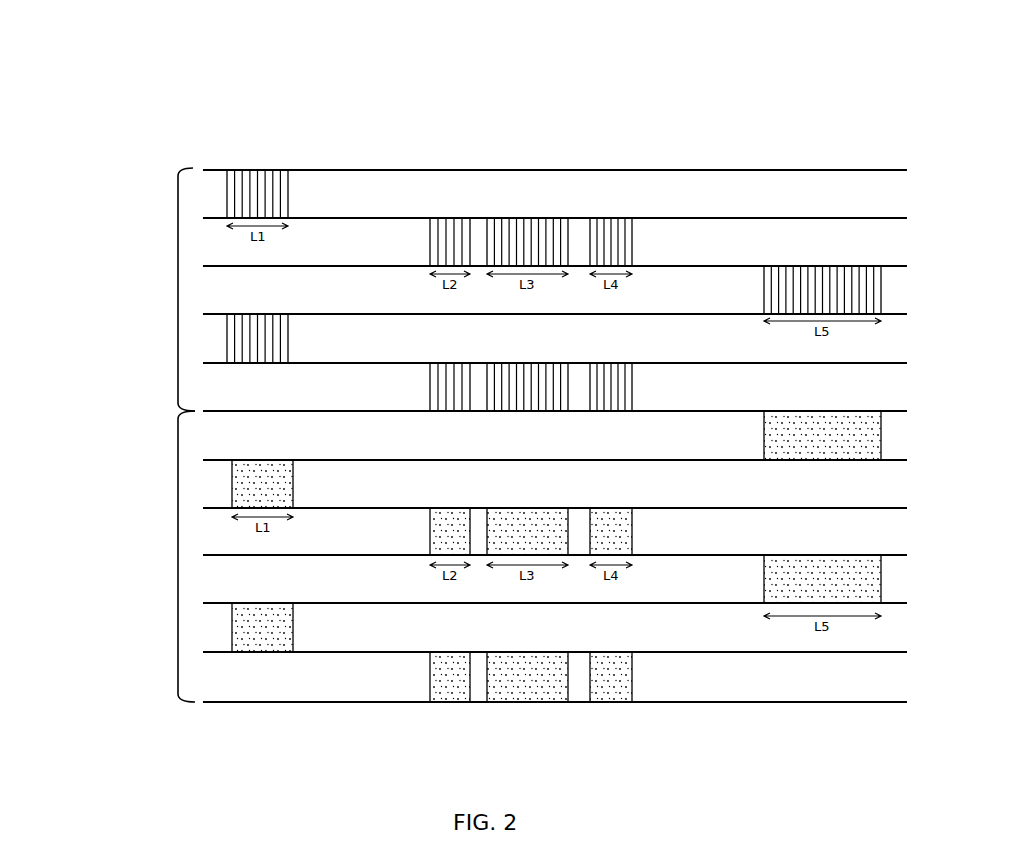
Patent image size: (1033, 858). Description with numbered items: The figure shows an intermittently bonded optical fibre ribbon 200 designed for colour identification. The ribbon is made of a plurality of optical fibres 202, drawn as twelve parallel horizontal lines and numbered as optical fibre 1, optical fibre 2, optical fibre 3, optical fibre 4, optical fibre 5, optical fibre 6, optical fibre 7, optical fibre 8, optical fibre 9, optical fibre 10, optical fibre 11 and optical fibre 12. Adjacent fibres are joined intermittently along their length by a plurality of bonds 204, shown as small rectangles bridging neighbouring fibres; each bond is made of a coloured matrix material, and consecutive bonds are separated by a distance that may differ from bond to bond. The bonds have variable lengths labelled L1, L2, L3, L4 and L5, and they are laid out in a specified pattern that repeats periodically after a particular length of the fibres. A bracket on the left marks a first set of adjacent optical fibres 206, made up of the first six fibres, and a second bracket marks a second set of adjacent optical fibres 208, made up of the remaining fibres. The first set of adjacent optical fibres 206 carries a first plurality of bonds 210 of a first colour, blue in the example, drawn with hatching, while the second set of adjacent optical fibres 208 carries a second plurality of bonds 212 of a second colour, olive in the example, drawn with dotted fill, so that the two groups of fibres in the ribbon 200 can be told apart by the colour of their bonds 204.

The intermittently bonded optical fibre ribbon 200 is at (53, 22).
The optical fibres 202 is at (330, 170).
The bonds 204 is at (633, 242).
The first set of adjacent optical fibres 206 is at (178, 290).
The second set of adjacent optical fibres 208 is at (178, 556).
The first plurality of bonds 210 is at (228, 195).
The second plurality of bonds 212 is at (293, 628).
The optical fibre 1 is at (566, 170).
The optical fibre 2 is at (566, 218).
The optical fibre 3 is at (566, 266).
The optical fibre 4 is at (566, 314).
The optical fibre 5 is at (566, 363).
The optical fibre 6 is at (566, 411).
The optical fibre 7 is at (566, 460).
The optical fibre 8 is at (566, 508).
The optical fibre 9 is at (566, 555).
The optical fibre 10 is at (570, 603).
The optical fibre 11 is at (570, 652).
The optical fibre 12 is at (570, 702).